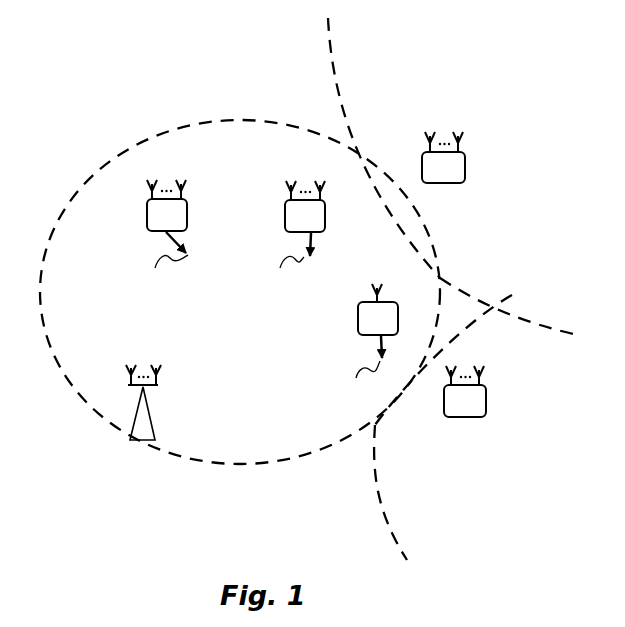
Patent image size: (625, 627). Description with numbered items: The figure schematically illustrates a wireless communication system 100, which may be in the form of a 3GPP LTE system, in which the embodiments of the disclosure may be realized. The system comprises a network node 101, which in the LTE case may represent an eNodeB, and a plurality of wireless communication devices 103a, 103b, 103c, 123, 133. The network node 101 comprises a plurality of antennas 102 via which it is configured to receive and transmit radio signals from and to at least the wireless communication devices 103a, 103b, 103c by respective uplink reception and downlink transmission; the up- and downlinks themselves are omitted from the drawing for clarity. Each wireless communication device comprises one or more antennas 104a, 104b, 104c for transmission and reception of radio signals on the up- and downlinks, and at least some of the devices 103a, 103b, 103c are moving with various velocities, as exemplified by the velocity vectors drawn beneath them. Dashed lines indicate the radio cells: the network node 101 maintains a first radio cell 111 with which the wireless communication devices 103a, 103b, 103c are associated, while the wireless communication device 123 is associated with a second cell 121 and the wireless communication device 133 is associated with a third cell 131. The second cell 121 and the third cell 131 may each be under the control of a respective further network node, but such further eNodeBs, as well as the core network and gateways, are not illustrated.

The wireless communication system 100 is at (103, 88).
The network node 101 is at (152, 382).
The antennas 102 is at (131, 372).
The wireless communication device 103a is at (149, 216).
The wireless communication device 103b is at (274, 216).
The wireless communication device 103c is at (349, 324).
The antenna 104a is at (198, 164).
The antenna 104b is at (292, 182).
The antenna 104c is at (377, 288).
The first radio cell 111 is at (74, 393).
The second cell 121 is at (328, 47).
The wireless communication device 123 is at (466, 181).
The third cell 131 is at (373, 484).
The wireless communication device 133 is at (487, 417).